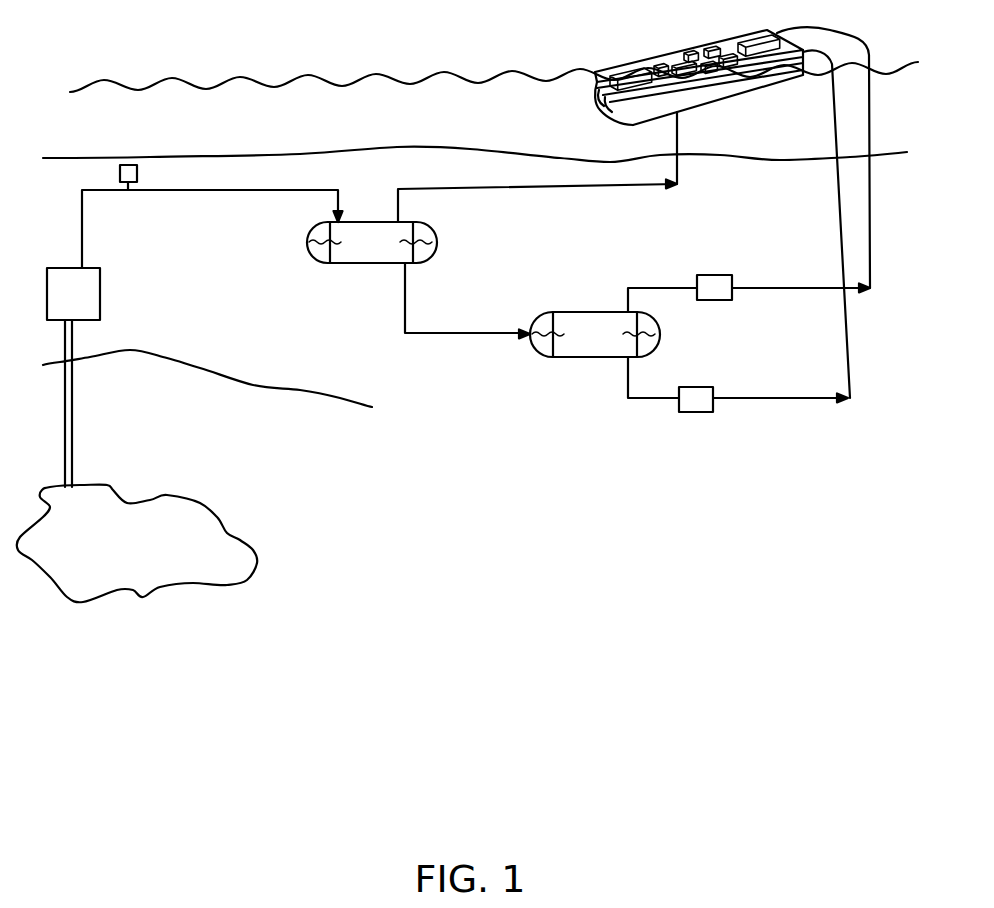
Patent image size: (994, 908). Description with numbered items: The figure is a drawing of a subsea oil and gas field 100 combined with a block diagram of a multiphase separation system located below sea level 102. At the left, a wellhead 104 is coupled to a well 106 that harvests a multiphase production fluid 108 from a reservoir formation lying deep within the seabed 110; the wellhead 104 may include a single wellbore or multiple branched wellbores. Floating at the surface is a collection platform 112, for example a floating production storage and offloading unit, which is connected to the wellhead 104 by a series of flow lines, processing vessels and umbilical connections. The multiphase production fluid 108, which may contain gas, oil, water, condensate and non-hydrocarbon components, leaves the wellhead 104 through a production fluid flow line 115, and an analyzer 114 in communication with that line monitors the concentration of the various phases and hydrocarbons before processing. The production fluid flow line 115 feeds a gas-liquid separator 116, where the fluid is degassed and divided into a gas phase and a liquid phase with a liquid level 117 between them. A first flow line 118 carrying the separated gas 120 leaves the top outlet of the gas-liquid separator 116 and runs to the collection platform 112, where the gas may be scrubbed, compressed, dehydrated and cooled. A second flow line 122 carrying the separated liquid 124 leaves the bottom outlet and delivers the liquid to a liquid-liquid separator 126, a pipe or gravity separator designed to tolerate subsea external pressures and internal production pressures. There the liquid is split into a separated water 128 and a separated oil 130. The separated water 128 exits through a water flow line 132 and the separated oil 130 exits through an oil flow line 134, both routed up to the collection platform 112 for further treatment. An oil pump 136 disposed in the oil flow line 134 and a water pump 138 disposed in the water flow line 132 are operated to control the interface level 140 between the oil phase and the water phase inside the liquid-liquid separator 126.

The subsea oil and gas field 100 is at (448, 853).
The sea level 102 is at (253, 82).
The wellhead 104 is at (53, 308).
The well 106 is at (75, 329).
The multiphase production fluid 108 is at (102, 554).
The seabed 110 is at (474, 147).
The collection platform 112 is at (700, 47).
The analyzer 114 is at (120, 174).
The production fluid flow line 115 is at (195, 190).
The gas-liquid separator 116 is at (350, 254).
The liquid level 117 is at (439, 242).
The first flow line 118 is at (497, 192).
The separated gas 120 is at (322, 233).
The second flow line 122 is at (472, 338).
The separated liquid 124 is at (322, 254).
The liquid-liquid separator 126 is at (574, 346).
The separated water 128 is at (545, 343).
The separated oil 130 is at (541, 320).
The water flow line 132 is at (656, 400).
The oil flow line 134 is at (664, 286).
The oil pump 136 is at (715, 302).
The water pump 138 is at (698, 413).
The interface level 140 is at (662, 335).